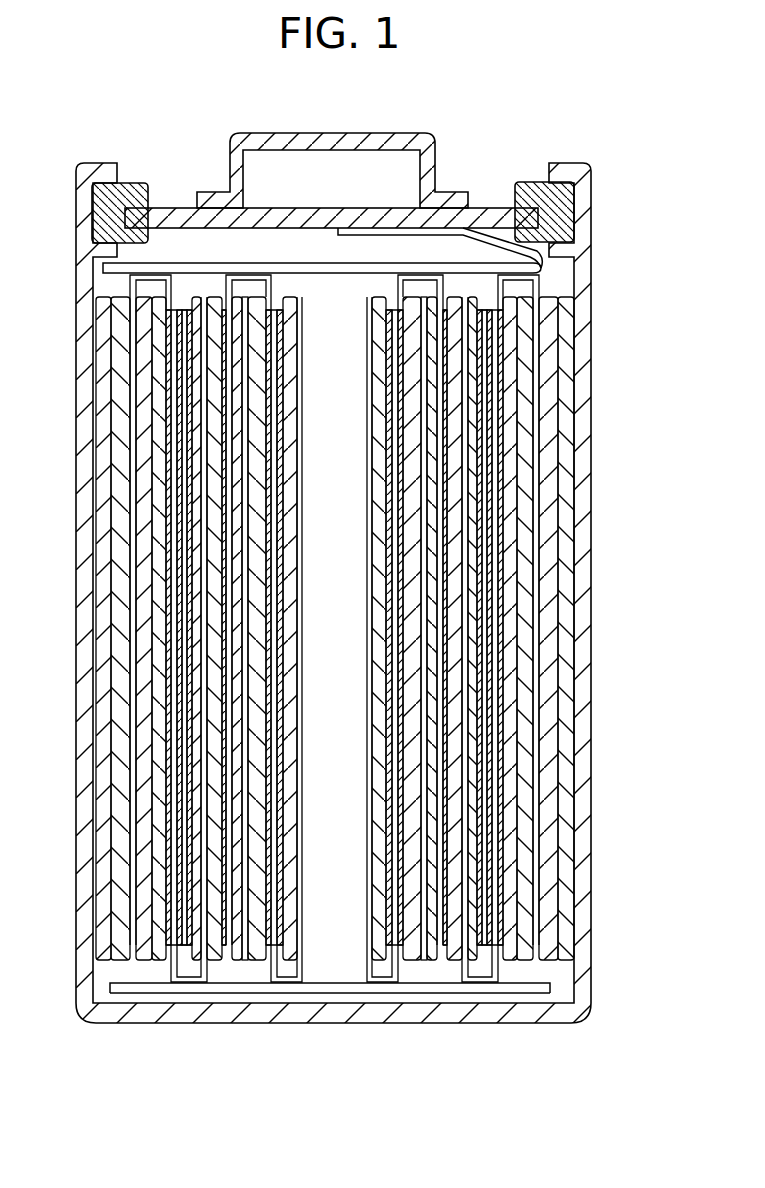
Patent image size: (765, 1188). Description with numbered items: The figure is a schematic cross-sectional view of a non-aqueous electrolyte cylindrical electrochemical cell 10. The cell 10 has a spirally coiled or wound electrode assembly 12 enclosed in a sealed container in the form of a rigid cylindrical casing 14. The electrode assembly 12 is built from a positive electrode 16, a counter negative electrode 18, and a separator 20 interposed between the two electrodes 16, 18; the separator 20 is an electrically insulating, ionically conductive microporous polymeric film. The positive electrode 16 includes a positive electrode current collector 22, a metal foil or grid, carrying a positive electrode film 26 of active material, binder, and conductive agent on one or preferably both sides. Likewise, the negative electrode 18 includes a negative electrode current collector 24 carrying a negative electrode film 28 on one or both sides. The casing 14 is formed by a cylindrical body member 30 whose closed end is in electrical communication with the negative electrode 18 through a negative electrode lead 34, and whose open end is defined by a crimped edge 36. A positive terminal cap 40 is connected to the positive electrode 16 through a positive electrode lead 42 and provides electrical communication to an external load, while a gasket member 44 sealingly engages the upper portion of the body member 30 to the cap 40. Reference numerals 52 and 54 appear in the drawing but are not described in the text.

The electrochemical cell 10 is at (449, 107).
The electrode assembly 12 is at (574, 405).
The cylindrical casing 14 is at (600, 166).
The positive electrode 16 is at (632, 519).
The negative electrode 18 is at (632, 735).
The separator 20 is at (513, 723).
The positive electrode current collector 22 is at (150, 265).
The negative electrode current collector 24 is at (503, 758).
The positive electrode film 26 is at (538, 610).
The negative electrode film 28 is at (498, 805).
The cylindrical body member 30 is at (577, 490).
The negative electrode lead 34 is at (338, 995).
The crimped edge 36 is at (112, 172).
The positive terminal cap 40 is at (348, 126).
The positive electrode lead 42 is at (306, 266).
The gasket member 44 is at (140, 198).
The insulating sheet 52 is at (444, 997).
The connection tab 54 is at (428, 238).